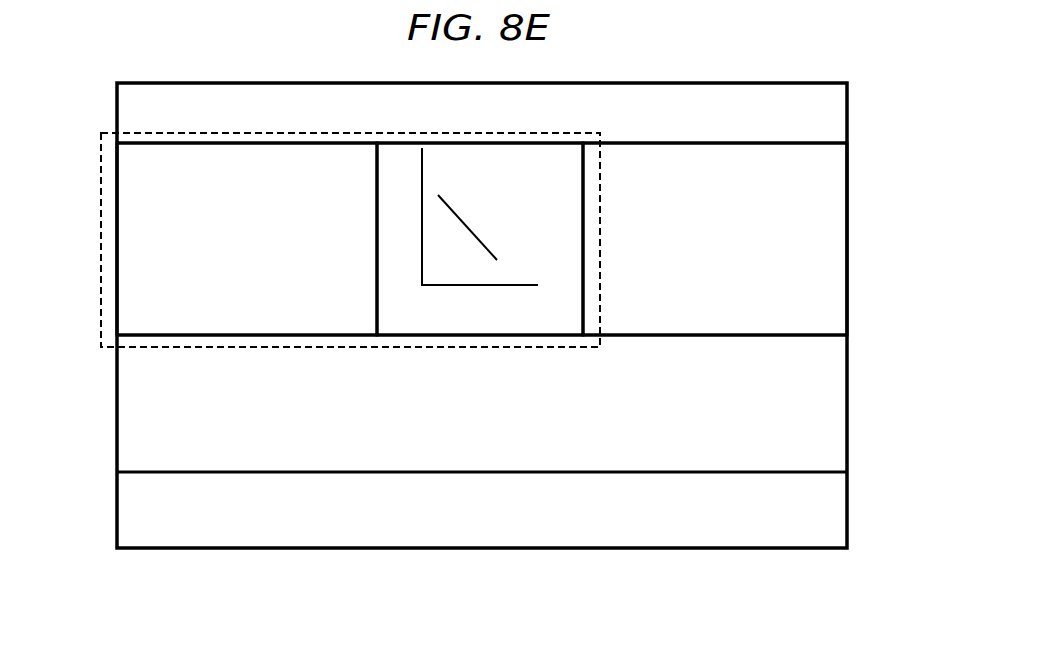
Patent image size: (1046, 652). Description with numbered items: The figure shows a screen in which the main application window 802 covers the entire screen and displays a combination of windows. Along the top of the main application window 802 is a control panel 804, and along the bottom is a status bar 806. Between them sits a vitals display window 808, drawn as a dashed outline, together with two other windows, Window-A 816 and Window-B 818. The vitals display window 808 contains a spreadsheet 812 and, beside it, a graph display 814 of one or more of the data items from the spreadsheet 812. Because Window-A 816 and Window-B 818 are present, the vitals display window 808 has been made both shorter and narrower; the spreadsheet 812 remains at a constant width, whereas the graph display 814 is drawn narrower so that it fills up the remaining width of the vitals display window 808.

The main application window 802 is at (262, 575).
The control panel 804 is at (715, 108).
The status bar 806 is at (602, 523).
The vitals display window 808 is at (102, 160).
The spreadsheet 812 is at (140, 270).
The graph display 814 is at (555, 167).
The Window-A 816 is at (140, 372).
The Window-B 818 is at (823, 298).